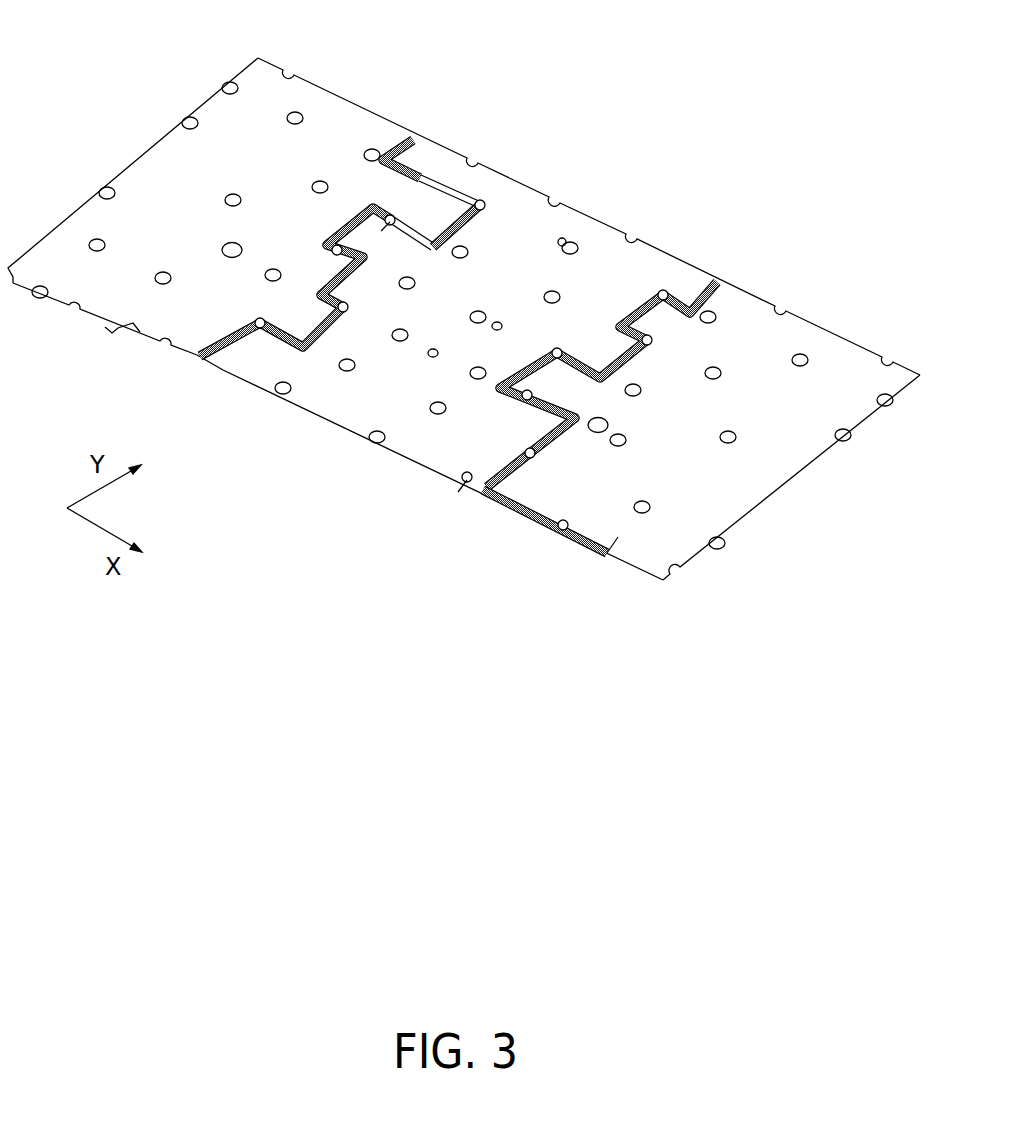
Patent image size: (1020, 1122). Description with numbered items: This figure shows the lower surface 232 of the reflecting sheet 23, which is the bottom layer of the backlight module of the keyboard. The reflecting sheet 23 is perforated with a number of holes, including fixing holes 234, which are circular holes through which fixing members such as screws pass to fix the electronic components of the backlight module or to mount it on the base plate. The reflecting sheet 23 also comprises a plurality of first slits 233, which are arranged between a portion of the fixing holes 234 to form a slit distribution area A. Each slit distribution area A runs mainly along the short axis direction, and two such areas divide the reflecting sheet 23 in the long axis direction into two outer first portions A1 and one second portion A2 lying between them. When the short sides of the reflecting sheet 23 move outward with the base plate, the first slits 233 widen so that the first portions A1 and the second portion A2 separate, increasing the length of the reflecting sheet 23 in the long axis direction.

The reflecting sheet 23 is at (206, 50).
The lower surface 232 is at (167, 153).
The first slits 233 is at (410, 136).
The fixing holes 234 is at (664, 291).
The first portion A1 is at (97, 298).
The second portion A2 is at (352, 424).
The slit distribution area A is at (221, 343).